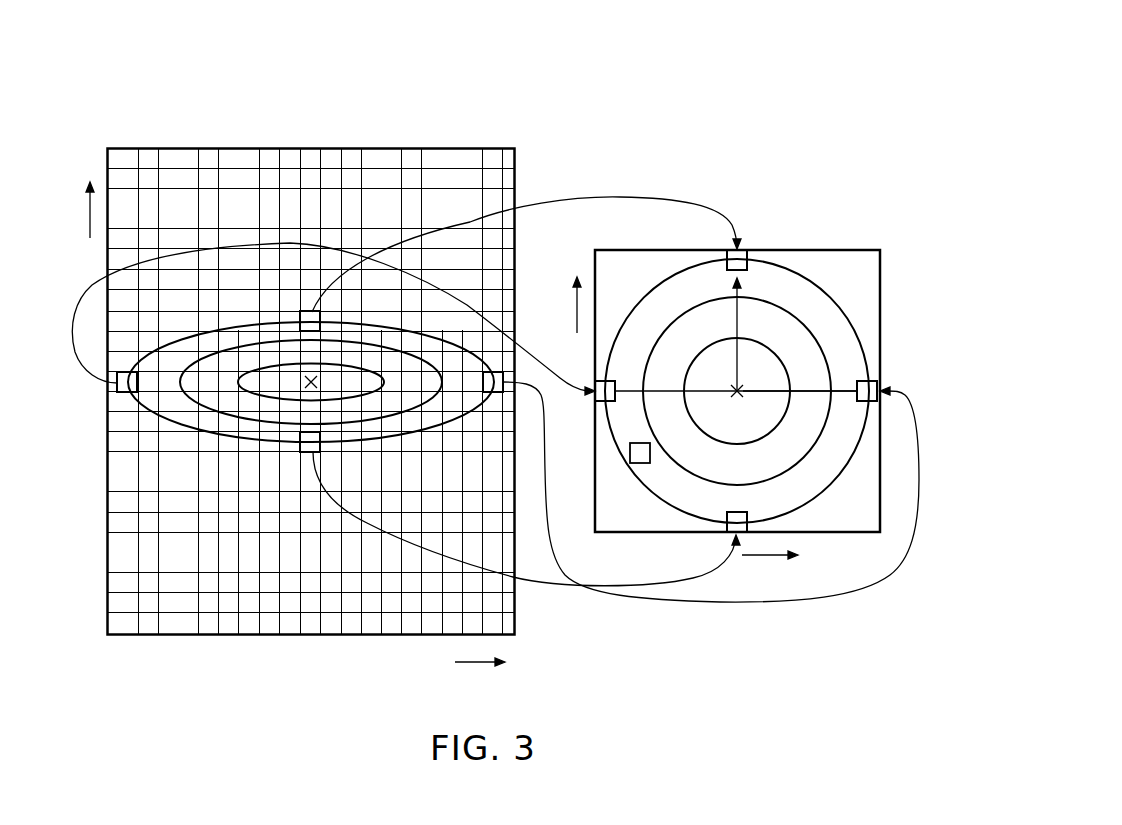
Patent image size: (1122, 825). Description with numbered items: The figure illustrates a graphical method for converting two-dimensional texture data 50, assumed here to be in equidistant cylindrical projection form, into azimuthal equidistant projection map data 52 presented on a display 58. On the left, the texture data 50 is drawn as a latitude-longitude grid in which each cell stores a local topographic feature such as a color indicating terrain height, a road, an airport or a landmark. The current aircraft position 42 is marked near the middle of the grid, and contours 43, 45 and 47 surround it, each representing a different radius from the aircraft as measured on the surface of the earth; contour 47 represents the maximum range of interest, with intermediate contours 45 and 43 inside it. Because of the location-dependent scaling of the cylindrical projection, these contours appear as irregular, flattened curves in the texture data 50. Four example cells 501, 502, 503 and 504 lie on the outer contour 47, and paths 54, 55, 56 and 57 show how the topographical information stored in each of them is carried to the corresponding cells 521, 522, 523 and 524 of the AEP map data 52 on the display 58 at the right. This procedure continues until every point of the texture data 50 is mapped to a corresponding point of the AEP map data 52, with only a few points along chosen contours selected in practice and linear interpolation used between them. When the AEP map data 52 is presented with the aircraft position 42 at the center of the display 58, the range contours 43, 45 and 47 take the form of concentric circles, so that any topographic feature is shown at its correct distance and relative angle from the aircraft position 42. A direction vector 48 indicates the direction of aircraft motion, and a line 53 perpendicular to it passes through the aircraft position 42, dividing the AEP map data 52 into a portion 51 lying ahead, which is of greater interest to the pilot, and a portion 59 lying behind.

The texture data 50 is at (210, 110).
The AEP map data 52 is at (740, 386).
The current aircraft position 42 is at (311, 386).
The contour 43 is at (250, 399).
The contour 45 is at (207, 355).
The contour 47 is at (257, 322).
The direction vector 48 is at (738, 318).
The portion of AEP topographic map information 51 is at (863, 289).
The line 53 is at (808, 394).
The path 54 is at (90, 285).
The path 55 is at (576, 198).
The path 56 is at (847, 593).
The path 57 is at (556, 587).
The display 58 is at (672, 249).
The portion of topographic map information 59 is at (860, 523).
The cell 501 is at (114, 387).
The cell 502 is at (302, 311).
The cell 503 is at (492, 371).
The cell 504 is at (322, 449).
The cell 521 is at (600, 380).
The cell 522 is at (744, 250).
The cell 523 is at (876, 381).
The cell 524 is at (725, 529).